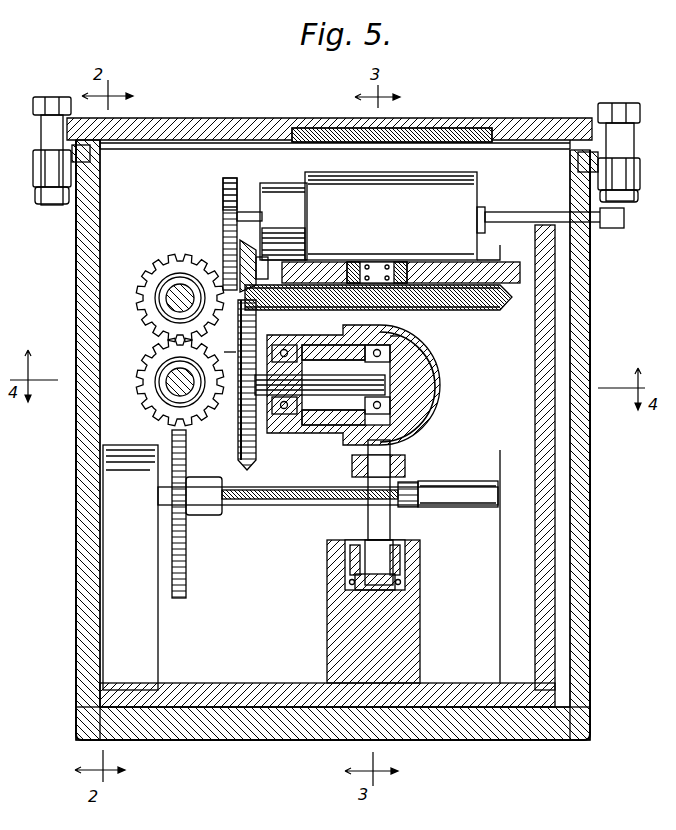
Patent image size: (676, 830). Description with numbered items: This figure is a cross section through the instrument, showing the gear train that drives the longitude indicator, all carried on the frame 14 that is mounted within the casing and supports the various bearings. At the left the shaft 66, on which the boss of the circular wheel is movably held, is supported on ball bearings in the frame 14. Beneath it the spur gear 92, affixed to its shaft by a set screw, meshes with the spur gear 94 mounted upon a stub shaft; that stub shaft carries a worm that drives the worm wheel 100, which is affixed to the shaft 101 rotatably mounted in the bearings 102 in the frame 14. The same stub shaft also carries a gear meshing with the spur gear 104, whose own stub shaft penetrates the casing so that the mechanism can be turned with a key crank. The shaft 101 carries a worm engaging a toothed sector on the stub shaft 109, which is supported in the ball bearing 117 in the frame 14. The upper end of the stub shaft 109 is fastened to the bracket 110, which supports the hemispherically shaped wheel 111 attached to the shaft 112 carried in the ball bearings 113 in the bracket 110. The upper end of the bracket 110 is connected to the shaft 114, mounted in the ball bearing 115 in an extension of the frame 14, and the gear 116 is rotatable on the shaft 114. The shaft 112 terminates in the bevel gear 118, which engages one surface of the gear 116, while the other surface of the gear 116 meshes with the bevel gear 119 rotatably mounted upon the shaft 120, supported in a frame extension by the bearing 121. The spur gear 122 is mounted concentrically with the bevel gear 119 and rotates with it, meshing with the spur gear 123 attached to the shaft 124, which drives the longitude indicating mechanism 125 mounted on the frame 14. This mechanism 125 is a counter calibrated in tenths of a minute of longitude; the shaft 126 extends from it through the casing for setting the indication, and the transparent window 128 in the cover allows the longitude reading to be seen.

The frame 14 is at (556, 590).
The shaft 66 is at (170, 303).
The spur gear 92 is at (148, 272).
The spur gear 94 is at (148, 392).
The worm wheel 100 is at (188, 586).
The shaft 101 is at (252, 500).
The bearings 102 is at (160, 508).
The spur gear 104 is at (228, 356).
The stub shaft 109 is at (400, 470).
The bracket 110 is at (325, 418).
The hemispherically shaped member or wheel 111 is at (436, 375).
The shaft 112 is at (318, 375).
The ball bearings 113 is at (282, 345).
The shaft 114 is at (392, 334).
The ball bearing 115 is at (385, 262).
The gear 116 is at (462, 310).
The ball bearing 117 is at (418, 550).
The bevel gear 118 is at (250, 458).
The bevel gear 119 is at (228, 225).
The shaft 120 is at (300, 244).
The bearing 121 is at (298, 228).
The spur gear 122 is at (240, 260).
The spur gear 123 is at (228, 200).
The shaft 124 is at (248, 212).
The longitude indicating mechanism 125 is at (377, 244).
The shaft 126 is at (508, 214).
The transparent window 128 is at (395, 128).